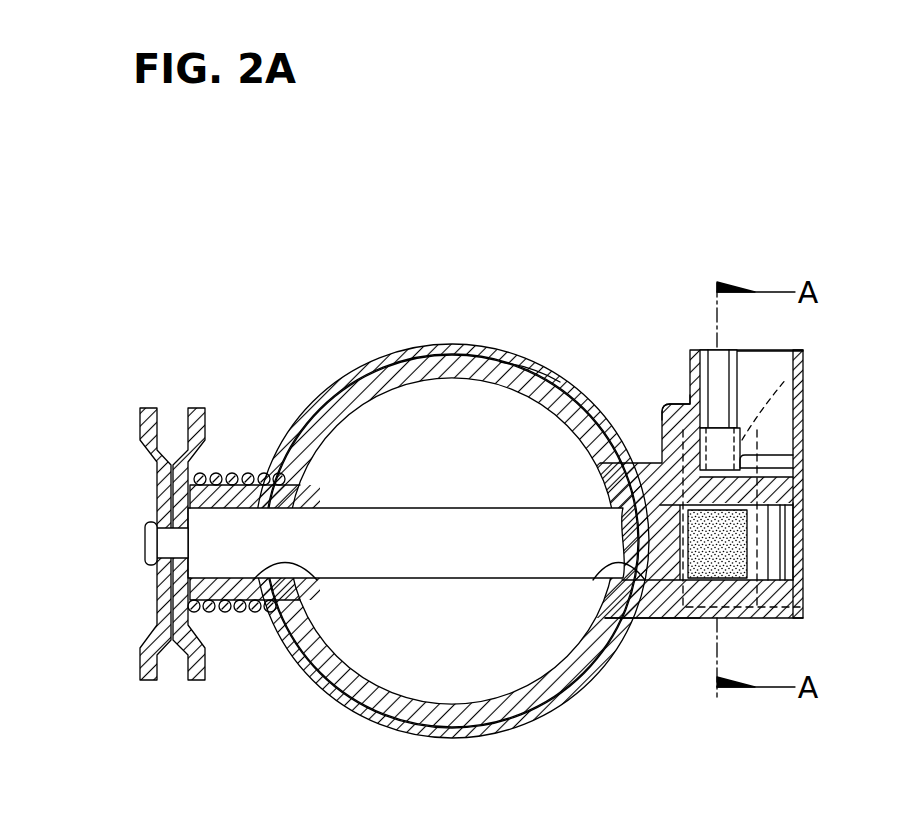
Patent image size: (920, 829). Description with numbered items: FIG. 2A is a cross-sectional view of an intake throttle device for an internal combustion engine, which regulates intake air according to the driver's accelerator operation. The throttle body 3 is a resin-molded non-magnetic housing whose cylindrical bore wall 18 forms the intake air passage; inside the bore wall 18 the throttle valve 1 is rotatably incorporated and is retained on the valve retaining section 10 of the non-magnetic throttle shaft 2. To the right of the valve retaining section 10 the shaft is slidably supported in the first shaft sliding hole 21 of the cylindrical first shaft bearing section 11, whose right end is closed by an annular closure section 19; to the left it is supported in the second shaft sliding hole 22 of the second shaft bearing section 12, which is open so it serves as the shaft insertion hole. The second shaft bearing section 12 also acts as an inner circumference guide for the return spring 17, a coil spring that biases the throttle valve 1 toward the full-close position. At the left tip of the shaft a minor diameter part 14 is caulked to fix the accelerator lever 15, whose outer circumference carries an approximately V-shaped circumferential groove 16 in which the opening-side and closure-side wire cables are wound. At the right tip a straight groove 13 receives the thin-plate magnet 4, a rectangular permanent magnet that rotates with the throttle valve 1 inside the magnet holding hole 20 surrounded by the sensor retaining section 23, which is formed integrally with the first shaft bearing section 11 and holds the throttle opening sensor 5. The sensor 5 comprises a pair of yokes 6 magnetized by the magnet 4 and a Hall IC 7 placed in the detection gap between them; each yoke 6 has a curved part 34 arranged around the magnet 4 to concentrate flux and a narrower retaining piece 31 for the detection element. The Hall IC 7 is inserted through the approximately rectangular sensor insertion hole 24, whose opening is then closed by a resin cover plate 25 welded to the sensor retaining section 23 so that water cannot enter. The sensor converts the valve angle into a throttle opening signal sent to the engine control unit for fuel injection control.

The throttle valve 1 is at (432, 395).
The throttle shaft 2 is at (432, 582).
The throttle body 3 is at (330, 368).
The thin-plate magnet 4 is at (696, 620).
The throttle opening sensor 5 is at (690, 327).
The yokes 6 is at (787, 378).
The Hall IC 7 is at (777, 453).
The valve retaining section 10 is at (462, 565).
The first shaft bearing section 11 is at (660, 619).
The second shaft bearing section 12 is at (248, 613).
The groove 13 is at (765, 550).
The minor diameter part 14 is at (165, 540).
The accelerator lever 15 is at (197, 410).
The circumferential groove 16 is at (186, 418).
The return spring 17 is at (233, 473).
The bore wall 18 is at (517, 377).
The annular closure section 19 is at (786, 517).
The magnet holding hole 20 is at (777, 530).
The first shaft sliding hole 21 is at (596, 590).
The second shaft sliding hole 22 is at (306, 588).
The sensor retaining section 23 is at (670, 407).
The sensor insertion hole 24 is at (795, 417).
The cover plate 25 is at (798, 350).
The magnetic detection element retaining piece 31 is at (825, 389).
The curved part 34 is at (773, 570).